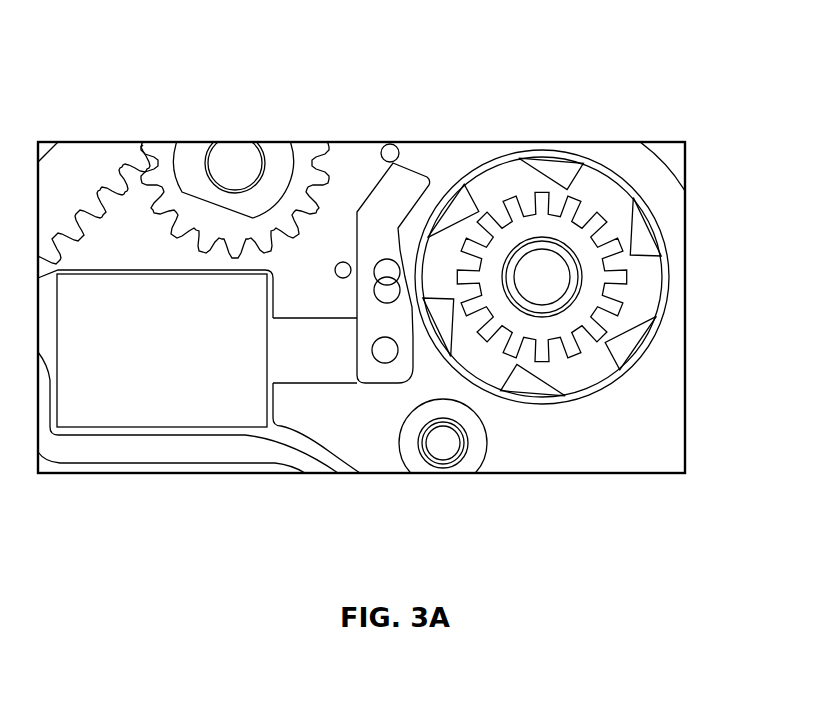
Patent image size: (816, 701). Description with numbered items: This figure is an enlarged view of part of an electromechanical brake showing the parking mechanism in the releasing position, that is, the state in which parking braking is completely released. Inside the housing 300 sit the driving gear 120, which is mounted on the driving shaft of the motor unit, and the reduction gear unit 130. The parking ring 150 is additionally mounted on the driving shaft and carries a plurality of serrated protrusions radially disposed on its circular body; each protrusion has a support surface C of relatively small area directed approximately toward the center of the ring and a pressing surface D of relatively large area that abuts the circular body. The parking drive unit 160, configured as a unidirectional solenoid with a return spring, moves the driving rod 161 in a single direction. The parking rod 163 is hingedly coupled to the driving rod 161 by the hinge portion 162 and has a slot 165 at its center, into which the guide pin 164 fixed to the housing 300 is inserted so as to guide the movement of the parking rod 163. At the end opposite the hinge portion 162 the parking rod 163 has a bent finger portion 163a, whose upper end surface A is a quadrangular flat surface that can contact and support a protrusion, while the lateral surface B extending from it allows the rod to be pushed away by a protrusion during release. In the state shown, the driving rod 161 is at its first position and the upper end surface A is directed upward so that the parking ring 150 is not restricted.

The driving gear 120 is at (585, 243).
The reduction gear unit 130 is at (588, 153).
The parking ring 150 is at (605, 367).
The parking drive unit 160 is at (112, 429).
The driving rod 161 is at (318, 362).
The hinge portion 162 is at (380, 352).
The parking rod 163 is at (368, 323).
The finger portion 163a is at (393, 198).
The guide pin 164 is at (383, 285).
The slot 165 is at (405, 387).
The housing 300 is at (247, 448).
The upper end surface A is at (412, 205).
The lateral surface B is at (430, 235).
The support surface C is at (456, 212).
The pressing surface D is at (487, 190).